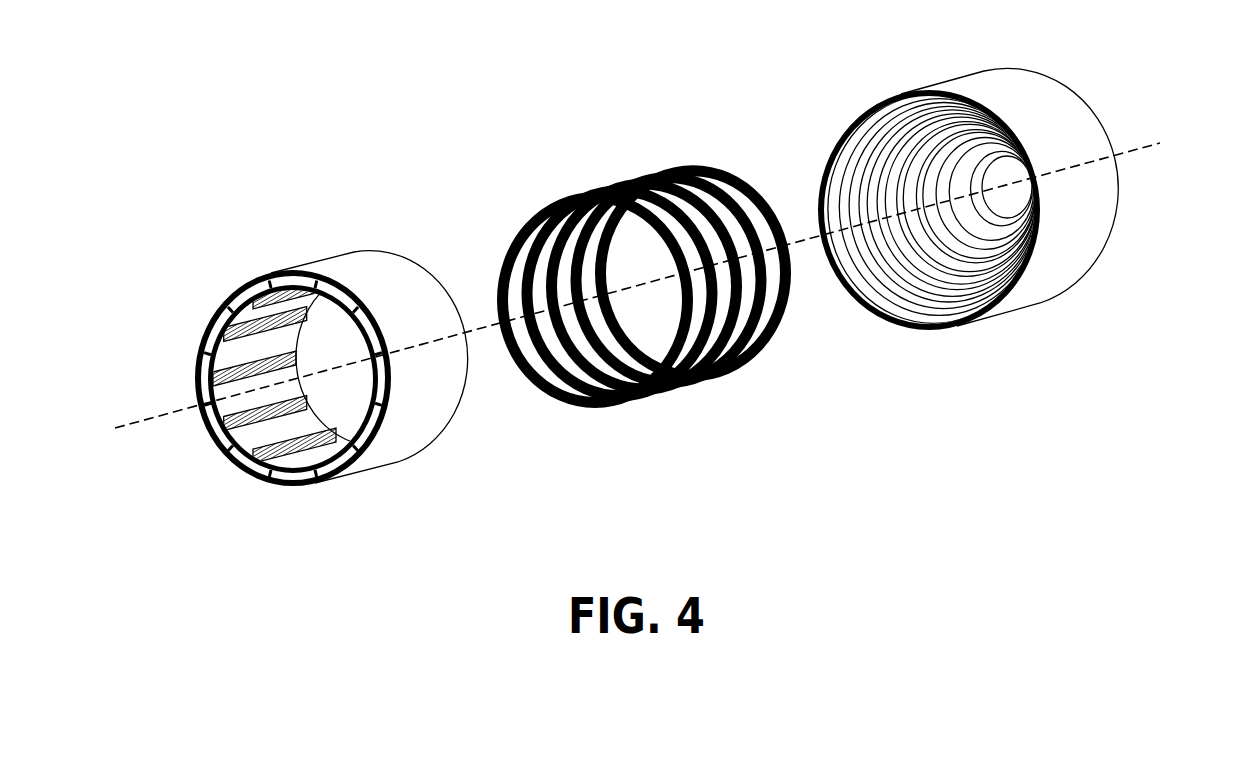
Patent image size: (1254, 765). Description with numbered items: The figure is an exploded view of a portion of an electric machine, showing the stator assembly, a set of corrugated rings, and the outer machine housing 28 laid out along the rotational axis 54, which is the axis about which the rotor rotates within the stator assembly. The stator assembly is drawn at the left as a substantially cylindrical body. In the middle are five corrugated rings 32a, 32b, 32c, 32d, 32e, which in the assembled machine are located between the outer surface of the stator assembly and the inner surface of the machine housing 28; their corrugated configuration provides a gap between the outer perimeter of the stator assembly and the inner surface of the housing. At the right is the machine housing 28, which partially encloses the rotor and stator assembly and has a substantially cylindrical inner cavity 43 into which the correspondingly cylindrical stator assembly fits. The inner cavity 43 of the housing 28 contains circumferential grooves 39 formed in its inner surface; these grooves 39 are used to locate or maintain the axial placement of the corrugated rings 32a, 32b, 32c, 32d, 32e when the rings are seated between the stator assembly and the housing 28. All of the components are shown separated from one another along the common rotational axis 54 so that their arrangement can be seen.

The machine housing 28 is at (1025, 308).
The corrugated ring 32a is at (589, 188).
The corrugated ring 32b is at (652, 170).
The corrugated ring 32c is at (698, 172).
The corrugated ring 32d is at (731, 182).
The corrugated ring 32e is at (778, 210).
The circumferential grooves 39 is at (888, 280).
The inner cavity 43 is at (930, 212).
The rotational axis 54 is at (651, 280).